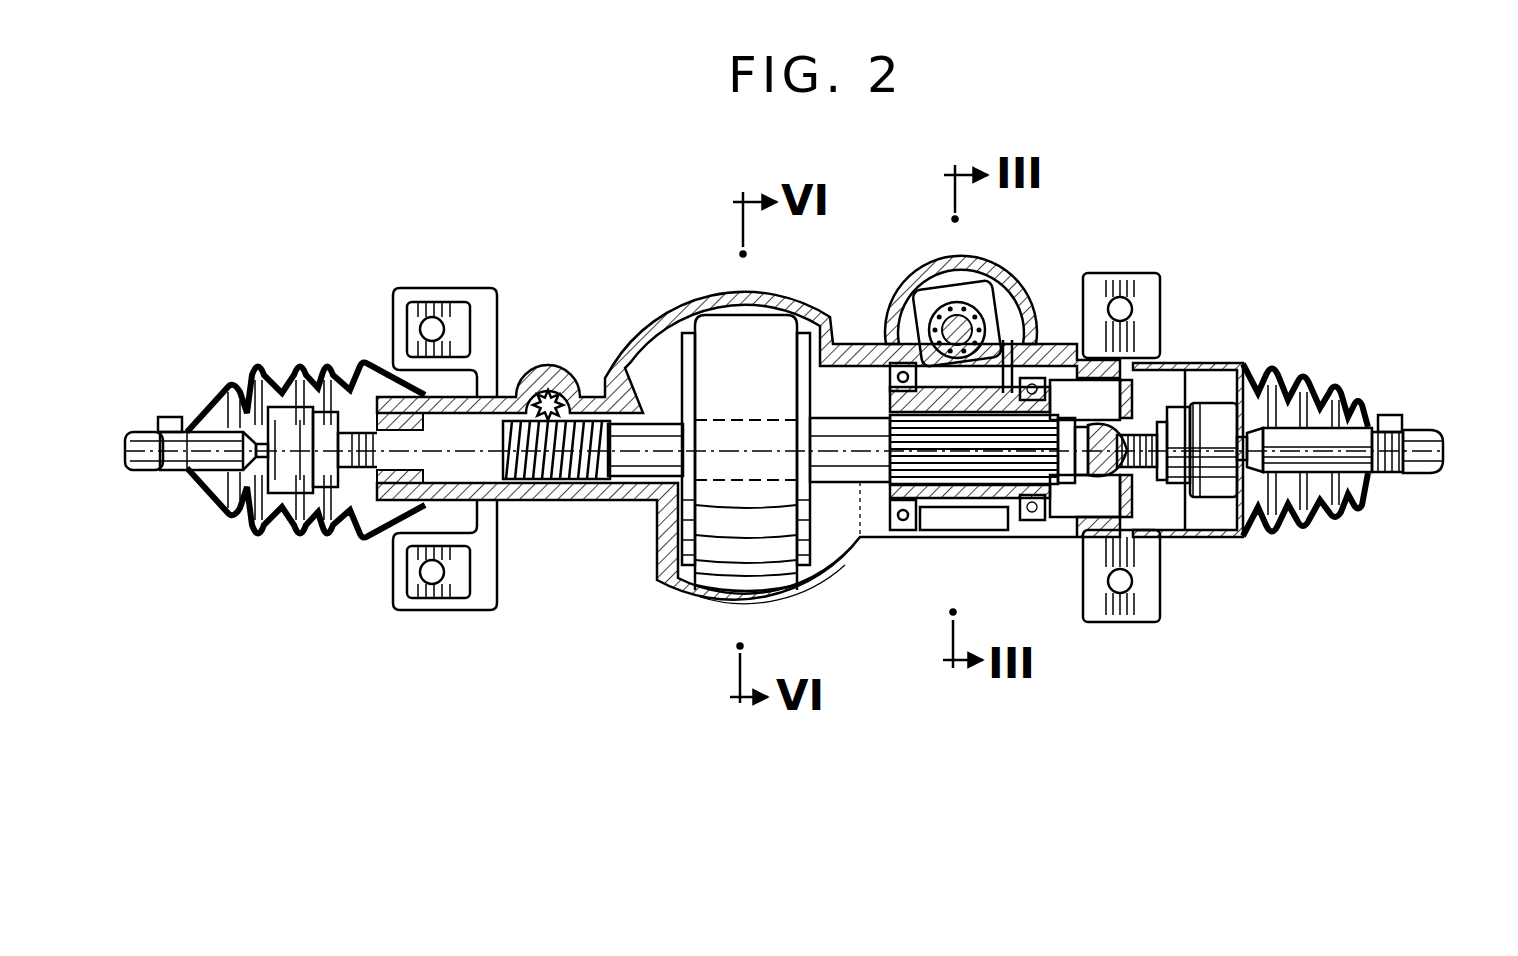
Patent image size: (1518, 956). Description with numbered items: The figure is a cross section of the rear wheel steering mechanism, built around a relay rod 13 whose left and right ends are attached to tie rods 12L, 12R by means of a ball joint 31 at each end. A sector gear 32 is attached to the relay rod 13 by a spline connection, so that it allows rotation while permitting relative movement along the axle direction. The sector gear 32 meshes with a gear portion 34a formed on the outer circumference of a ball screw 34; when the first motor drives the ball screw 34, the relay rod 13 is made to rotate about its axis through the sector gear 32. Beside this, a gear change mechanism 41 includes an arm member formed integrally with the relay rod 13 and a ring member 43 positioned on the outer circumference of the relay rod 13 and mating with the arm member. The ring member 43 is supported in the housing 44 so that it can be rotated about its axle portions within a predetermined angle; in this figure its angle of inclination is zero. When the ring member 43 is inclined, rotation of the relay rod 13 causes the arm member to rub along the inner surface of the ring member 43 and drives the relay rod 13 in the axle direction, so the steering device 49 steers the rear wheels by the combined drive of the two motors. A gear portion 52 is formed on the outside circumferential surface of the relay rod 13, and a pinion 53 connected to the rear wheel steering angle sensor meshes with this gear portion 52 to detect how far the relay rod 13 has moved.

The tie rod 12L is at (128, 440).
The tie rod 12R is at (1430, 440).
The relay rod 13 is at (852, 432).
The ball joint 31 is at (278, 522).
The sector gear 32 is at (1015, 372).
The ball screw 34 is at (922, 290).
The gear portion 34a is at (900, 340).
The gear change mechanism 41 is at (675, 366).
The ring member 43 is at (700, 578).
The housing 44 is at (812, 583).
The steering device 49 is at (840, 502).
The gear portion 52 is at (556, 498).
The pinion 53 is at (550, 392).